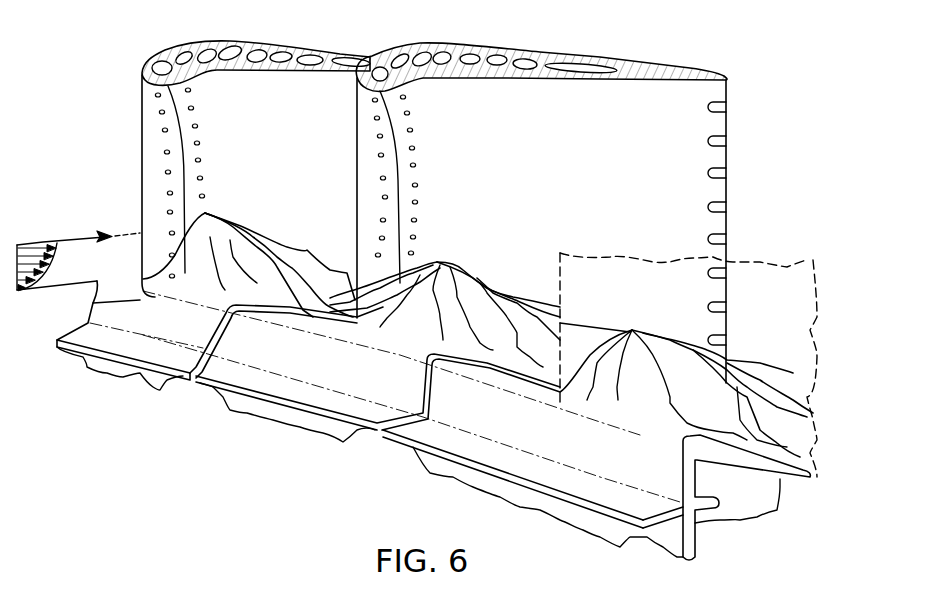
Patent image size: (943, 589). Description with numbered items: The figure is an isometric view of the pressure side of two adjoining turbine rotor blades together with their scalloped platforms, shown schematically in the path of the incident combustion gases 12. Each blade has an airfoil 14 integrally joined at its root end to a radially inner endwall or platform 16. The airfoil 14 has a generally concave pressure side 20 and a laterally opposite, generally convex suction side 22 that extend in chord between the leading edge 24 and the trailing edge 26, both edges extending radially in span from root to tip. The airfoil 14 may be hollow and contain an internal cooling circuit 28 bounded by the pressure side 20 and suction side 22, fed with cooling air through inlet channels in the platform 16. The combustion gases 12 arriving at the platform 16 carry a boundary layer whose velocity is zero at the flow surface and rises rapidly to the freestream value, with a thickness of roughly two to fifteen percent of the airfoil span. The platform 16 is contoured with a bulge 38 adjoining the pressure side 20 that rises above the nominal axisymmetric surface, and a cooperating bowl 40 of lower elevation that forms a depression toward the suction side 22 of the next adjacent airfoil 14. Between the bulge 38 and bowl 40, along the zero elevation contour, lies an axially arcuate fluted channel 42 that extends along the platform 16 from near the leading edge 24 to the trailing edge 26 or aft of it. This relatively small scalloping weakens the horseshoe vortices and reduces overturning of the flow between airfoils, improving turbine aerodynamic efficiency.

The combustion gases 12 is at (78, 238).
The airfoil 14 is at (774, 262).
The platform 16 is at (383, 432).
The pressure side 20 is at (535, 172).
The suction side 22 is at (505, 48).
The leading edge 24 is at (150, 121).
The trailing edge 26 is at (729, 120).
The internal cooling circuit 28 is at (431, 46).
The bulge 38 is at (208, 216).
The bowl 40 is at (327, 298).
The fluted channel 42 is at (220, 328).